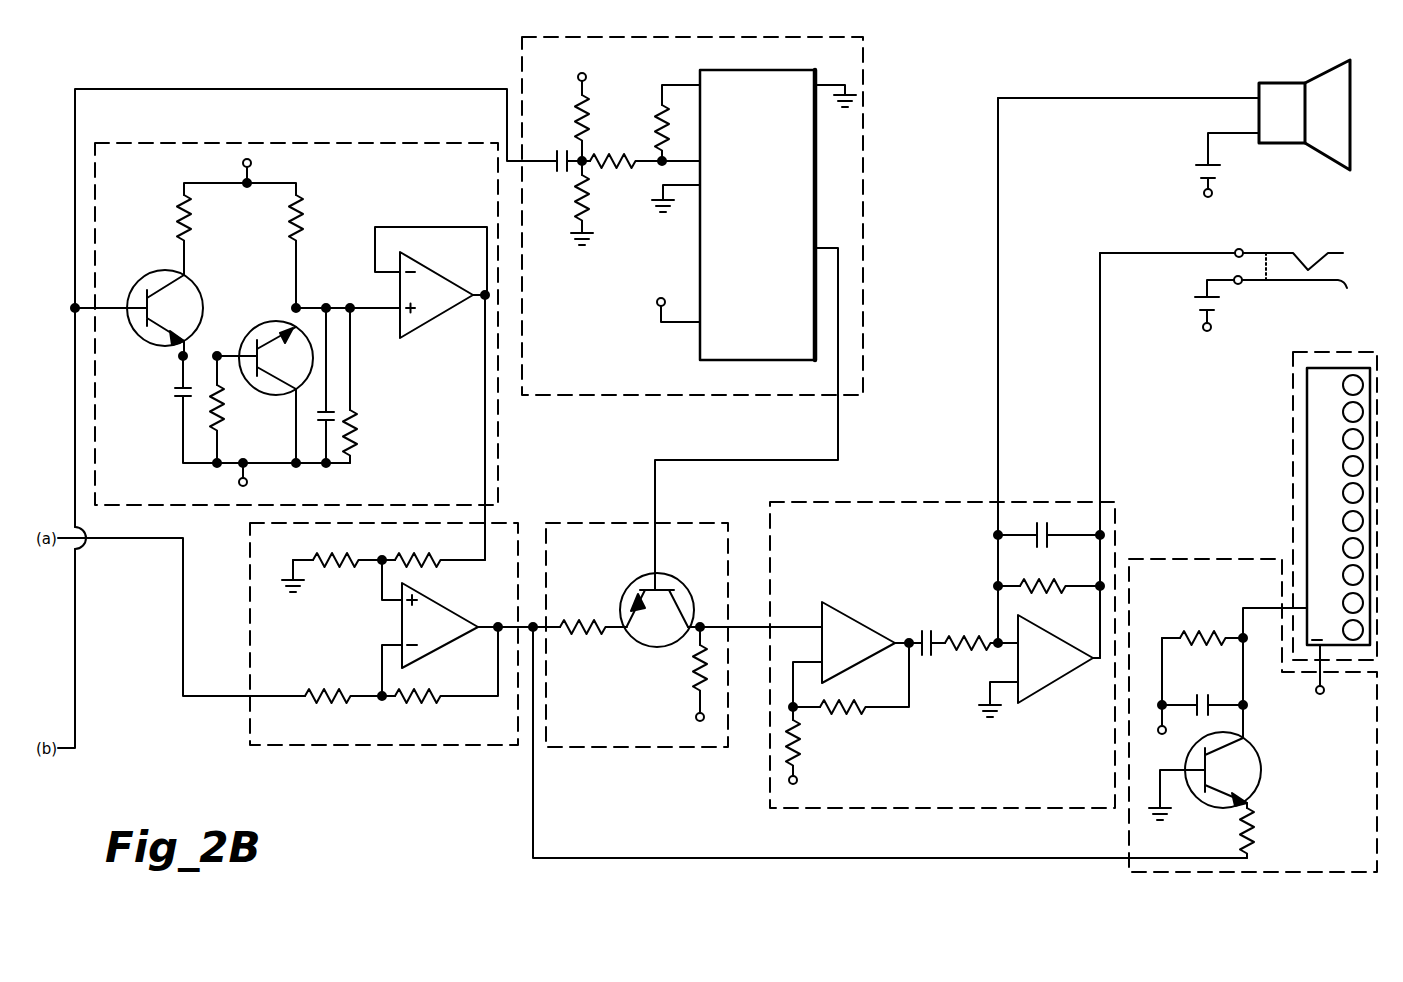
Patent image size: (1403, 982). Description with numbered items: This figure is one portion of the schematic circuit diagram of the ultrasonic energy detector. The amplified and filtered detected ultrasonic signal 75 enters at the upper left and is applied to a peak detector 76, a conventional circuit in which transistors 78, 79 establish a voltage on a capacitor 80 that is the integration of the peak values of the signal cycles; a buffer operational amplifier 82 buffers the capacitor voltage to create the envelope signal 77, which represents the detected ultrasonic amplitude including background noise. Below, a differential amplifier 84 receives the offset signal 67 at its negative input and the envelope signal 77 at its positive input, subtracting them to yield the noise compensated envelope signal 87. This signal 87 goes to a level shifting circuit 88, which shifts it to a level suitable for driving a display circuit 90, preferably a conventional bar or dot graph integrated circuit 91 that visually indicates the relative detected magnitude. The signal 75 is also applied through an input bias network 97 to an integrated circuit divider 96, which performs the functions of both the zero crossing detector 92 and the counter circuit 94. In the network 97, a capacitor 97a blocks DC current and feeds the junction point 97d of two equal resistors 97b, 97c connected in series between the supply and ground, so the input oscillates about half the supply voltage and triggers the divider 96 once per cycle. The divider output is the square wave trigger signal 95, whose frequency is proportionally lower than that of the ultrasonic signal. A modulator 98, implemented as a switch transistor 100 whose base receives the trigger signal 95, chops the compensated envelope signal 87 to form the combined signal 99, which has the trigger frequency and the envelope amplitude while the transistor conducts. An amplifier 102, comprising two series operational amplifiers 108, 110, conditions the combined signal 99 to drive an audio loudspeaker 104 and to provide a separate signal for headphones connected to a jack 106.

The offset signal 67 is at (183, 612).
The amplified and filtered detected ultrasonic signal 75 is at (466, 89).
The peak detector 76 is at (284, 330).
The envelope signal 77 is at (483, 445).
The transistor 78 is at (160, 272).
The transistor 79 is at (268, 322).
The capacitor 80 is at (333, 413).
The buffer operational amplifier 82 is at (440, 320).
The differential amplifier 84 is at (255, 718).
The noise compensated envelope signal 87 is at (495, 620).
The level shifting circuit 88 is at (1207, 557).
The display circuit 90 is at (1318, 513).
The bar or dot graph integrated circuit 91 is at (1355, 335).
The zero crossing detector 92 is at (747, 216).
The counter circuit 94 is at (747, 216).
The square wave trigger signal 95 is at (838, 407).
The integrated circuit divider 96 is at (700, 232).
The input bias network 97 is at (692, 216).
The capacitor 97a is at (556, 160).
The resistor 97b is at (590, 116).
The resistor 97c is at (565, 222).
The junction point 97d is at (588, 165).
The modulator 98 is at (630, 661).
The combined signal 99 is at (742, 627).
The transistor 100 is at (640, 588).
The amplifier 102 is at (889, 459).
The audio loudspeaker 104 is at (1283, 112).
The jack 106 is at (1278, 252).
The operational amplifier 108 is at (822, 607).
The operational amplifier 110 is at (1062, 680).